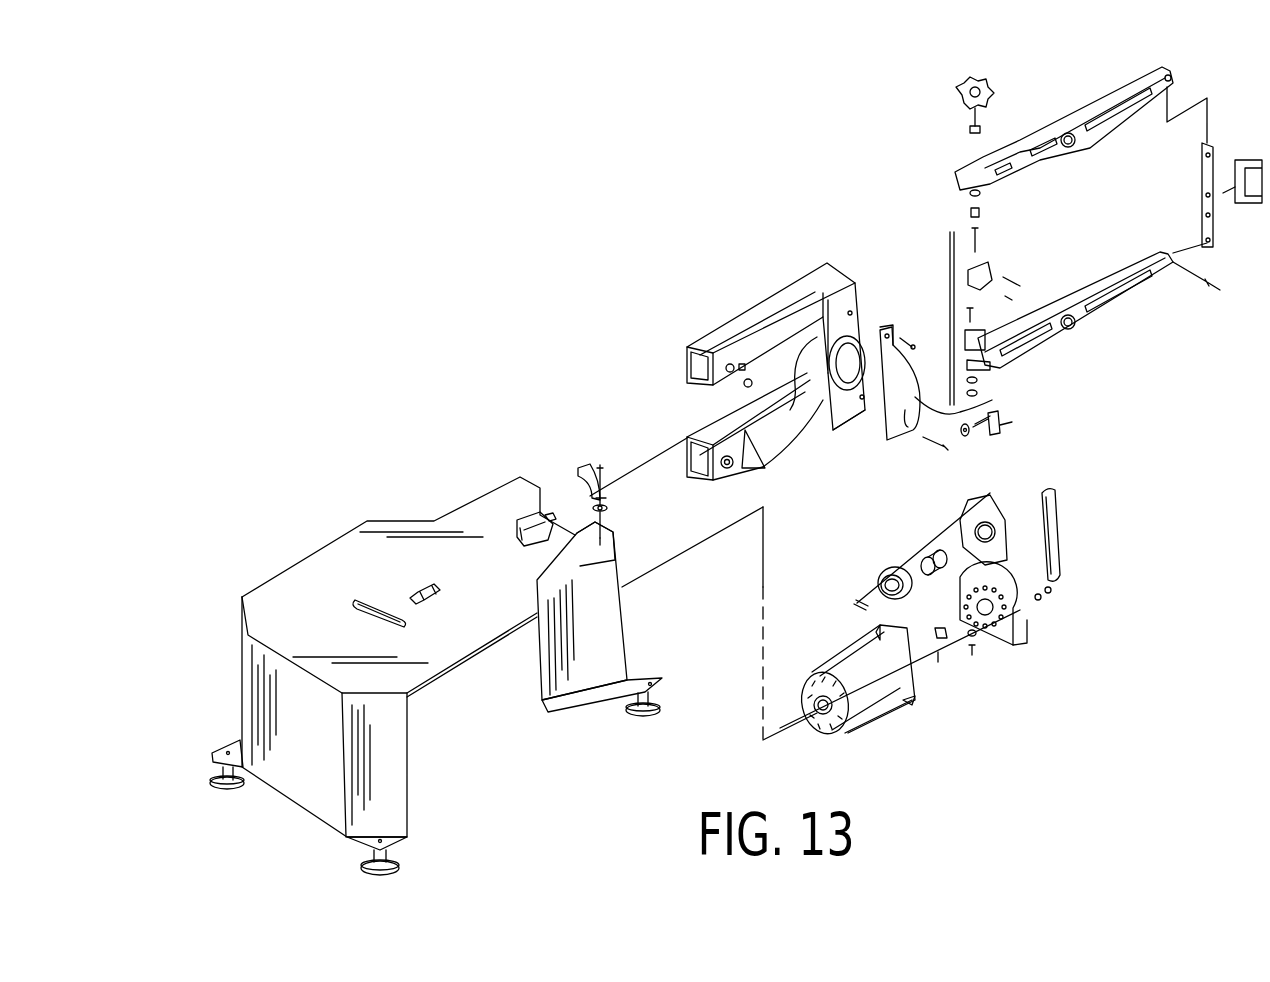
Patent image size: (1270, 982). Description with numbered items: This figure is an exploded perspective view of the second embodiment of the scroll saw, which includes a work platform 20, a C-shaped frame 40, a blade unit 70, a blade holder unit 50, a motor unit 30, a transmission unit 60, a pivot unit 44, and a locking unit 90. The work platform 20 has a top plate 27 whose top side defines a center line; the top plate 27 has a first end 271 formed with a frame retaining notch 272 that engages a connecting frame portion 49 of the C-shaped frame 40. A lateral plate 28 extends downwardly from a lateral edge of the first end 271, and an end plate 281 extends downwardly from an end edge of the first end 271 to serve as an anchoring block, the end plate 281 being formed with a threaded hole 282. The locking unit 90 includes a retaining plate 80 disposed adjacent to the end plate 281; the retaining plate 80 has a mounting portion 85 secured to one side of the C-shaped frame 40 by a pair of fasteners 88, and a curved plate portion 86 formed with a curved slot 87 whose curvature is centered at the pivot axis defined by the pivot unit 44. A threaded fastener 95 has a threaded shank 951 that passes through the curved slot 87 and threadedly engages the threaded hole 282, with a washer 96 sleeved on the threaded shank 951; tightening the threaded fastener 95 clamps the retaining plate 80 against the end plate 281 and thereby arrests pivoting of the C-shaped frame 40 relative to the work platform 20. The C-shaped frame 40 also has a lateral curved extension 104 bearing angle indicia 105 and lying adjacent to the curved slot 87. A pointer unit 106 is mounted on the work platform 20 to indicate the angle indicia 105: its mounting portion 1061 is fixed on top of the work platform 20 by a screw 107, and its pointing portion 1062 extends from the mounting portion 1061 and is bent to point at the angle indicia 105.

The work platform 20 is at (272, 572).
The top plate 27 is at (345, 534).
The first end 271 is at (520, 512).
The frame retaining notch 272 is at (547, 512).
The pivot unit 44 is at (429, 604).
The lateral plate 28 is at (604, 638).
The end plate 281 is at (627, 621).
The threaded hole 282 is at (628, 586).
The pointing portion 1062 is at (583, 472).
The screw 107 is at (607, 462).
The pointer unit 106 is at (606, 493).
The mounting portion 1061 is at (606, 503).
The C-shaped frame 40 is at (720, 323).
The connecting frame portion 49 is at (795, 355).
The lateral curved extension 104 is at (813, 400).
The angle indicia 105 is at (838, 432).
The retaining plate 80 is at (900, 320).
The mounting portion 85 is at (887, 333).
The fasteners 88 is at (914, 344).
The blade unit 70 is at (952, 252).
The blade holder unit 50 is at (1033, 130).
The curved plate portion 86 is at (978, 386).
The threaded fastener 95 is at (1007, 408).
The threaded shank 951 is at (990, 432).
The locking unit 90 is at (1012, 422).
The washer 96 is at (966, 440).
The curved slot 87 is at (913, 440).
The transmission unit 60 is at (913, 552).
The motor unit 30 is at (838, 647).